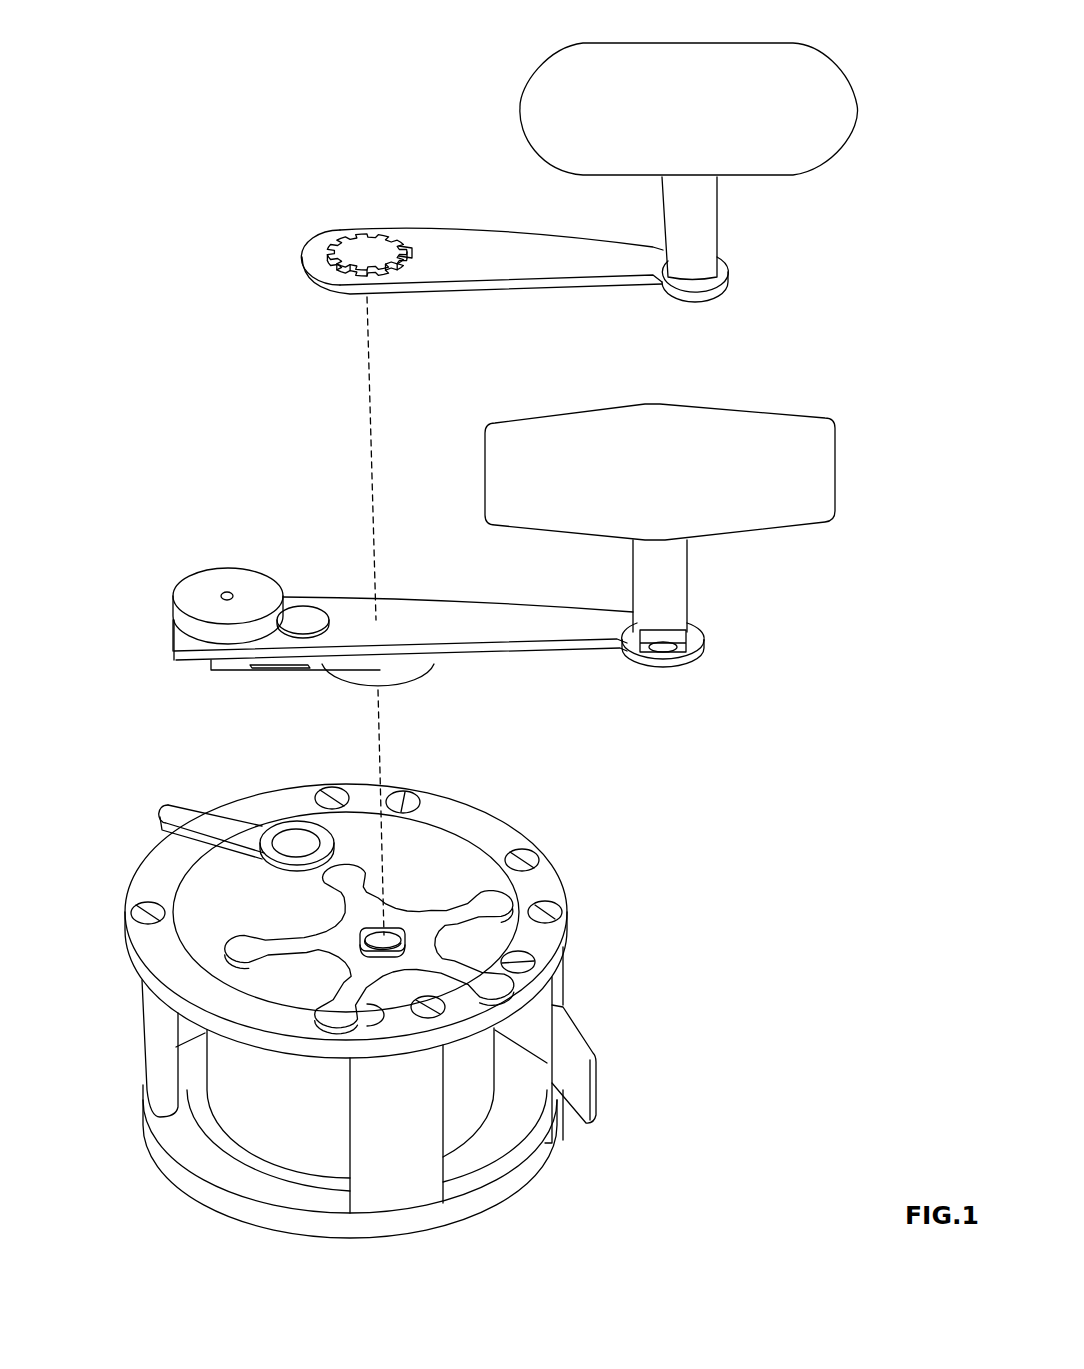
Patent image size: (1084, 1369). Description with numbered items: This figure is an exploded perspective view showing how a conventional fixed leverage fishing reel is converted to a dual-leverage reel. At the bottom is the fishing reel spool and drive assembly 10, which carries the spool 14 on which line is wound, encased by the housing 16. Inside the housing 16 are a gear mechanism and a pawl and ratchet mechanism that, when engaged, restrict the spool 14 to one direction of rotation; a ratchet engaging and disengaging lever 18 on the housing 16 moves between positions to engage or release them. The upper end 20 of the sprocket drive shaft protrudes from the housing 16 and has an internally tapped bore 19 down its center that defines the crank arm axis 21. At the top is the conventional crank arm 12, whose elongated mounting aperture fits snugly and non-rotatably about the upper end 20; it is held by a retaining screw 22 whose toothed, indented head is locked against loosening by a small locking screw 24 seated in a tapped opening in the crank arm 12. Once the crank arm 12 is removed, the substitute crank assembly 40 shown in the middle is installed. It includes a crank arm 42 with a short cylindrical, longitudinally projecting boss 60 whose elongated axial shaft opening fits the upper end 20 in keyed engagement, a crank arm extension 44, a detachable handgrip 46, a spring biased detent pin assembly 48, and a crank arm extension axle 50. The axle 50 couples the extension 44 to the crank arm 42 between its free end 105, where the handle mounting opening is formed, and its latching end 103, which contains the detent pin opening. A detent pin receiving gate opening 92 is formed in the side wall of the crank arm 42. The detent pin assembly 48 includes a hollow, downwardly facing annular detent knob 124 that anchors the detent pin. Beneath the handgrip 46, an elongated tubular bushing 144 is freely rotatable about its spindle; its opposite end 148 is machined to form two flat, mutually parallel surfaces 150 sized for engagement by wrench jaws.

The fishing reel spool and drive assembly 10 is at (404, 987).
The conventional crank arm 12 is at (570, 172).
The spool 14 is at (255, 1120).
The housing 16 is at (477, 810).
The ratchet engaging and disengaging lever 18 is at (213, 813).
The tapped bore 19 is at (343, 930).
The upper end of the sprocket drive shaft 20 is at (403, 930).
The crank arm axis 21 is at (392, 745).
The retaining screw 22 is at (353, 250).
The locking screw 24 is at (410, 248).
The substitute crank assembly 40 is at (489, 563).
The crank arm 42 is at (212, 671).
The crank arm extension 44 is at (445, 622).
The detachable handgrip 46 is at (690, 557).
The spring biased detent pin assembly 48 is at (186, 574).
The crank arm extension axle 50 is at (310, 622).
The boss 60 is at (432, 662).
The detent pin receiving gate opening 92 is at (280, 670).
The latching end 103 is at (178, 658).
The free end 105 is at (692, 657).
The detent knob 124 is at (187, 597).
The tubular bushing 144 is at (672, 585).
The opposite end of the bushing 148 is at (648, 638).
The flat surfaces 150 is at (665, 649).